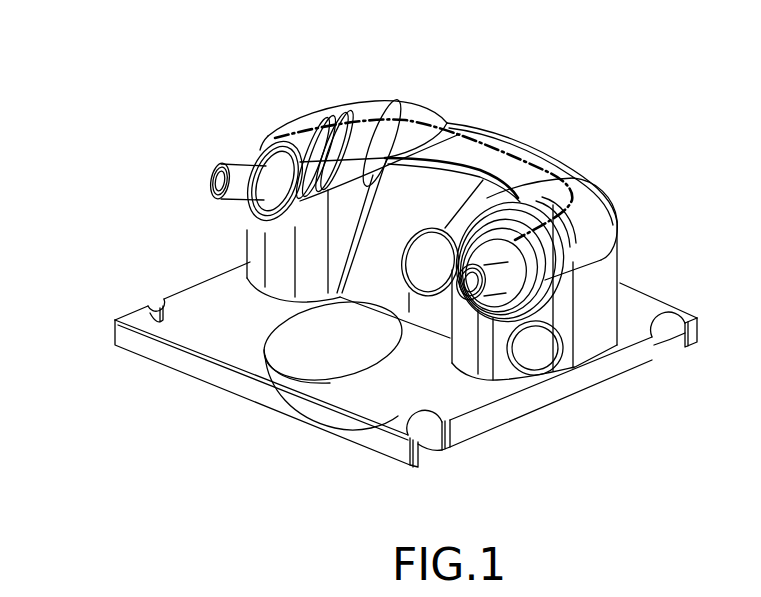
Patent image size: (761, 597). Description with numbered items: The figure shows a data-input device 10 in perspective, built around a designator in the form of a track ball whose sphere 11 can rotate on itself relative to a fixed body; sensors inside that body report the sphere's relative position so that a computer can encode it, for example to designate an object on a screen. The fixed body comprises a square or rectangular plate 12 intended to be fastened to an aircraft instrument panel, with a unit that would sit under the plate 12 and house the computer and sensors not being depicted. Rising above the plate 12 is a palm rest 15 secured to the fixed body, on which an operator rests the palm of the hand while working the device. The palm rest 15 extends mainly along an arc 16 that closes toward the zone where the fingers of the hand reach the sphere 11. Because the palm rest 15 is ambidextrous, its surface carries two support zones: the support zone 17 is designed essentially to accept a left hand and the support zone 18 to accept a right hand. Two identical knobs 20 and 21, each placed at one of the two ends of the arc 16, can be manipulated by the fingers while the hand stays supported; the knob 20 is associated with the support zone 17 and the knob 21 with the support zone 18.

The data-input device 10 is at (120, 251).
The sphere 11 is at (290, 357).
The plate 12 is at (183, 333).
The palm rest 15 is at (553, 155).
The arc 16 is at (492, 145).
The support zone 17 is at (338, 112).
The support zone 18 is at (527, 240).
The knob 20 is at (245, 178).
The knob 21 is at (500, 280).